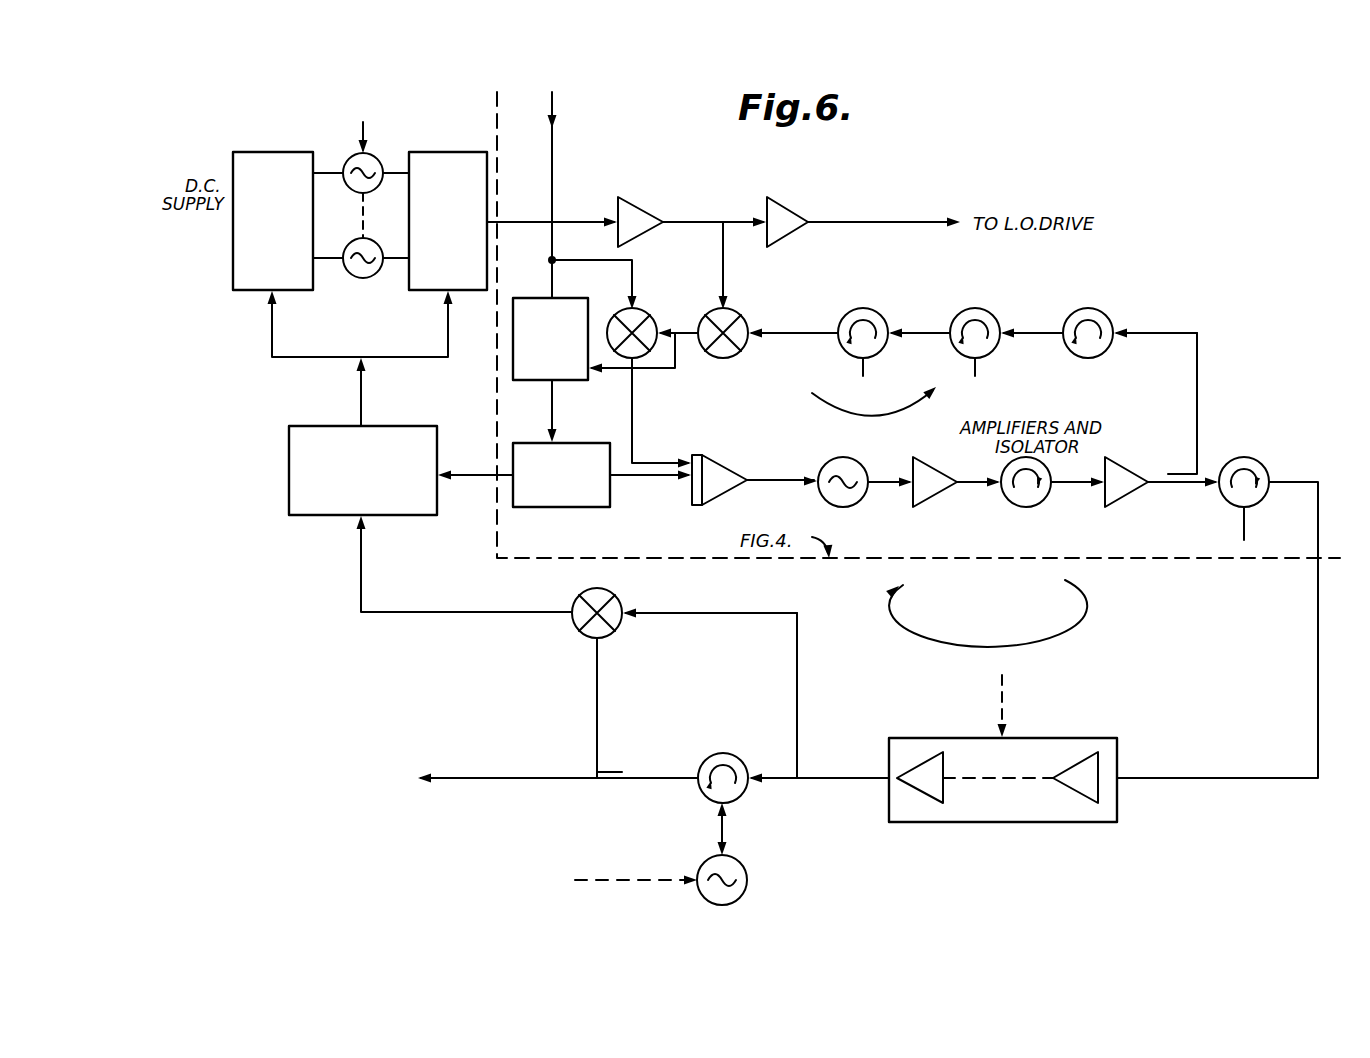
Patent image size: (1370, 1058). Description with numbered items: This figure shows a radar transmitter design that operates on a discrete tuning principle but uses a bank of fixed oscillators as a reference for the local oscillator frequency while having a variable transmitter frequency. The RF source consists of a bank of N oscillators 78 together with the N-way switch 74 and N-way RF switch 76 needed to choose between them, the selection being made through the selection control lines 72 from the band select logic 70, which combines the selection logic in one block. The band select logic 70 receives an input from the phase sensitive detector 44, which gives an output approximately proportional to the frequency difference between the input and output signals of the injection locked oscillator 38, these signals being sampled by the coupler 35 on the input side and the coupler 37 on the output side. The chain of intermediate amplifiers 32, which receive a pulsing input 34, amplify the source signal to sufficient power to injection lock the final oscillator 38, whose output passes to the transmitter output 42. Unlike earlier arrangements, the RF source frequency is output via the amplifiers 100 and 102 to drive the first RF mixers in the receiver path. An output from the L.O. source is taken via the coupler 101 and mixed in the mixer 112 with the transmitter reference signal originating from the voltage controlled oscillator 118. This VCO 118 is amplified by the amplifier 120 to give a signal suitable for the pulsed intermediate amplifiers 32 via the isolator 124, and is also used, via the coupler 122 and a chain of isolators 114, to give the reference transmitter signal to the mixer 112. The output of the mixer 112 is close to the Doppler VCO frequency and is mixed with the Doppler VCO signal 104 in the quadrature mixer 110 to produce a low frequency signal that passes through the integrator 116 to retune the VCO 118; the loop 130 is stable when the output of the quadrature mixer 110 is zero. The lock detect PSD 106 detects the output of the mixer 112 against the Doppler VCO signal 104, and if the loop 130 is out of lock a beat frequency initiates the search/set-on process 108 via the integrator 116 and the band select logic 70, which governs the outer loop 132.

The intermediate amplifiers 32 is at (1068, 818).
The pulsing input 34 is at (997, 712).
The coupler 35 is at (830, 771).
The coupler 37 is at (613, 772).
The high power oscillator 38 is at (747, 884).
The transmitter output 42 is at (506, 776).
The phase sensitive detector 44 is at (611, 636).
The band select logic 70 is at (430, 519).
The selection control lines 72 is at (381, 358).
The N-way switch 74 is at (281, 156).
The N-way RF switch 76 is at (450, 156).
The RF oscillators 78 is at (363, 126).
The amplifier 100 is at (641, 208).
The coupler 101 is at (716, 233).
The amplifier 102 is at (800, 203).
The Doppler VCO signal 104 is at (555, 158).
The lock detect PSD 106 is at (566, 382).
The search/set-on process 108 is at (578, 450).
The quadrature mixer 110 is at (652, 316).
The mixer 112 is at (742, 319).
The isolators 114 is at (989, 311).
The integrator 116 is at (721, 470).
The voltage controlled oscillator 118 is at (845, 458).
The amplifier 120 is at (956, 481).
The coupler 122 is at (1172, 474).
The isolator 124 is at (1266, 475).
The loop 130 is at (938, 400).
The loop 132 is at (1085, 612).